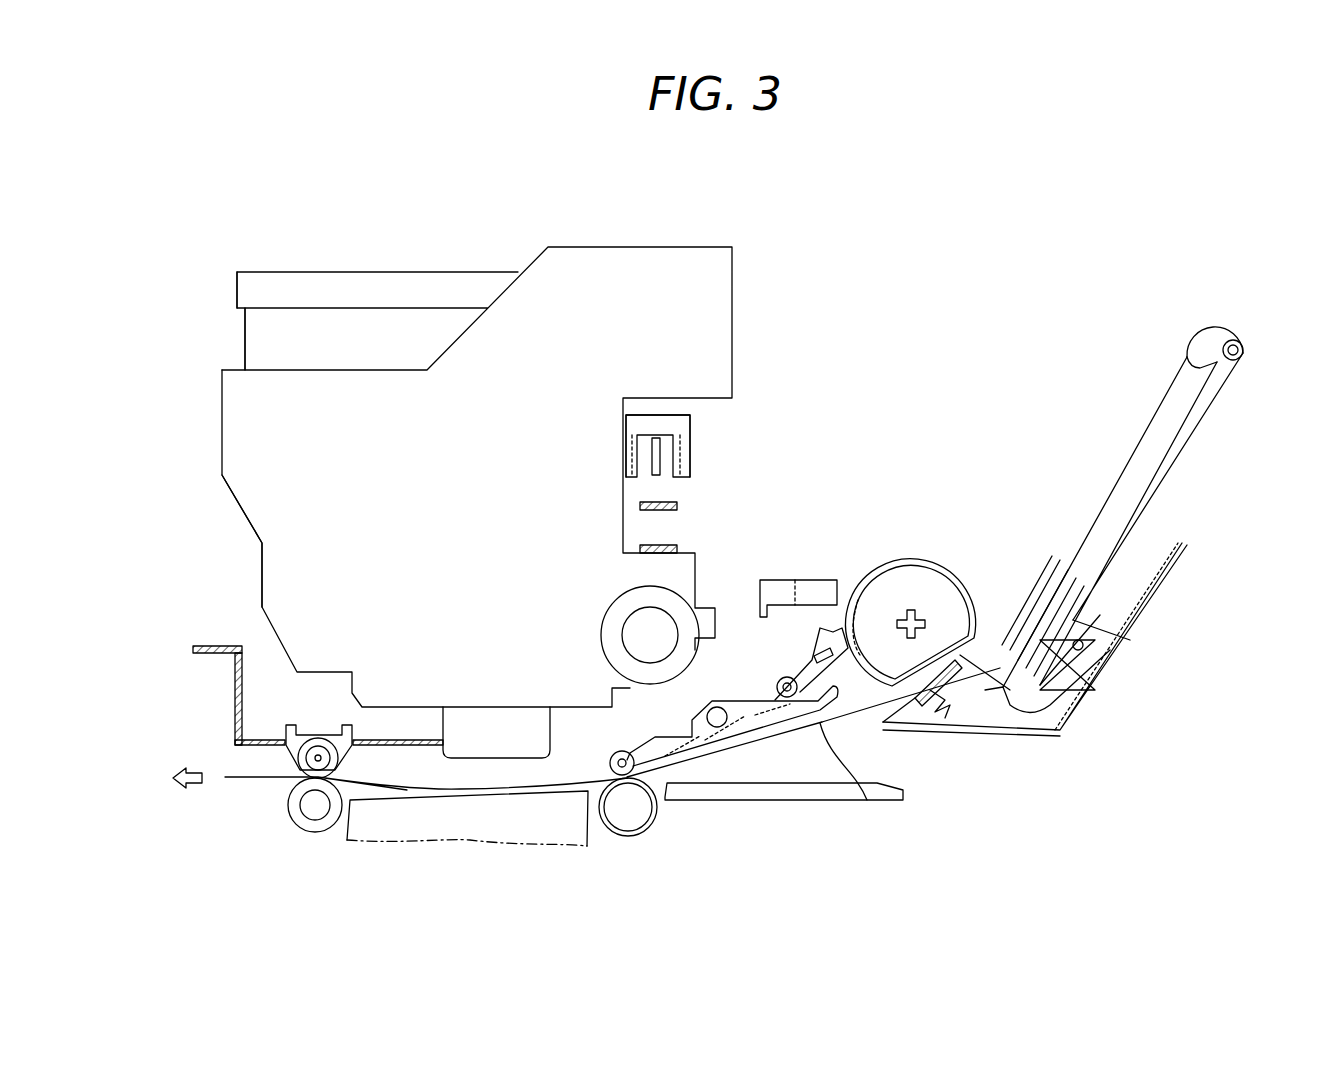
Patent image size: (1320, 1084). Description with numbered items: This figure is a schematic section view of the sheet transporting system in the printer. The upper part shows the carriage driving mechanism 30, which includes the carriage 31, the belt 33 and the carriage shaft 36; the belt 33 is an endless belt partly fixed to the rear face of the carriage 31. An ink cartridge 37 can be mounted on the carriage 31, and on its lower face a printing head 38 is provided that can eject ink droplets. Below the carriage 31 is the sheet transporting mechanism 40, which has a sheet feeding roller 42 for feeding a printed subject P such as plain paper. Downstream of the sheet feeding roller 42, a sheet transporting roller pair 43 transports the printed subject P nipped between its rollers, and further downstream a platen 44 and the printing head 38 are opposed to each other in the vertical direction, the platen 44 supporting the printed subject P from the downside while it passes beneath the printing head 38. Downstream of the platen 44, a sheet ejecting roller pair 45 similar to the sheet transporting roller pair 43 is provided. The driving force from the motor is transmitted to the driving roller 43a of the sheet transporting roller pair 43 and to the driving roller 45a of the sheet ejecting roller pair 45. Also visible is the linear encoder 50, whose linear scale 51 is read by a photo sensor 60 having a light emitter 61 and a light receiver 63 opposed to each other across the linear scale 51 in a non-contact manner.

The carriage driving mechanism 30 is at (446, 246).
The carriage 31 is at (260, 542).
The belt 33 is at (677, 548).
The carriage shaft 36 is at (630, 626).
The ink cartridge 37 is at (257, 329).
The printing head 38 is at (527, 730).
The sheet transporting mechanism 40 is at (963, 510).
The sheet feeding roller 42 is at (931, 546).
The sheet transporting roller pair 43 is at (636, 812).
The driving roller 43a is at (622, 837).
The platen 44 is at (465, 820).
The sheet ejecting roller pair 45 is at (300, 808).
The driving roller 45a is at (312, 833).
The linear encoder 50 is at (706, 424).
The linear scale 51 is at (652, 460).
The photo sensor 60 is at (700, 467).
The light emitter 61 is at (630, 444).
The light receiver 63 is at (690, 448).
The printed subject P is at (910, 751).